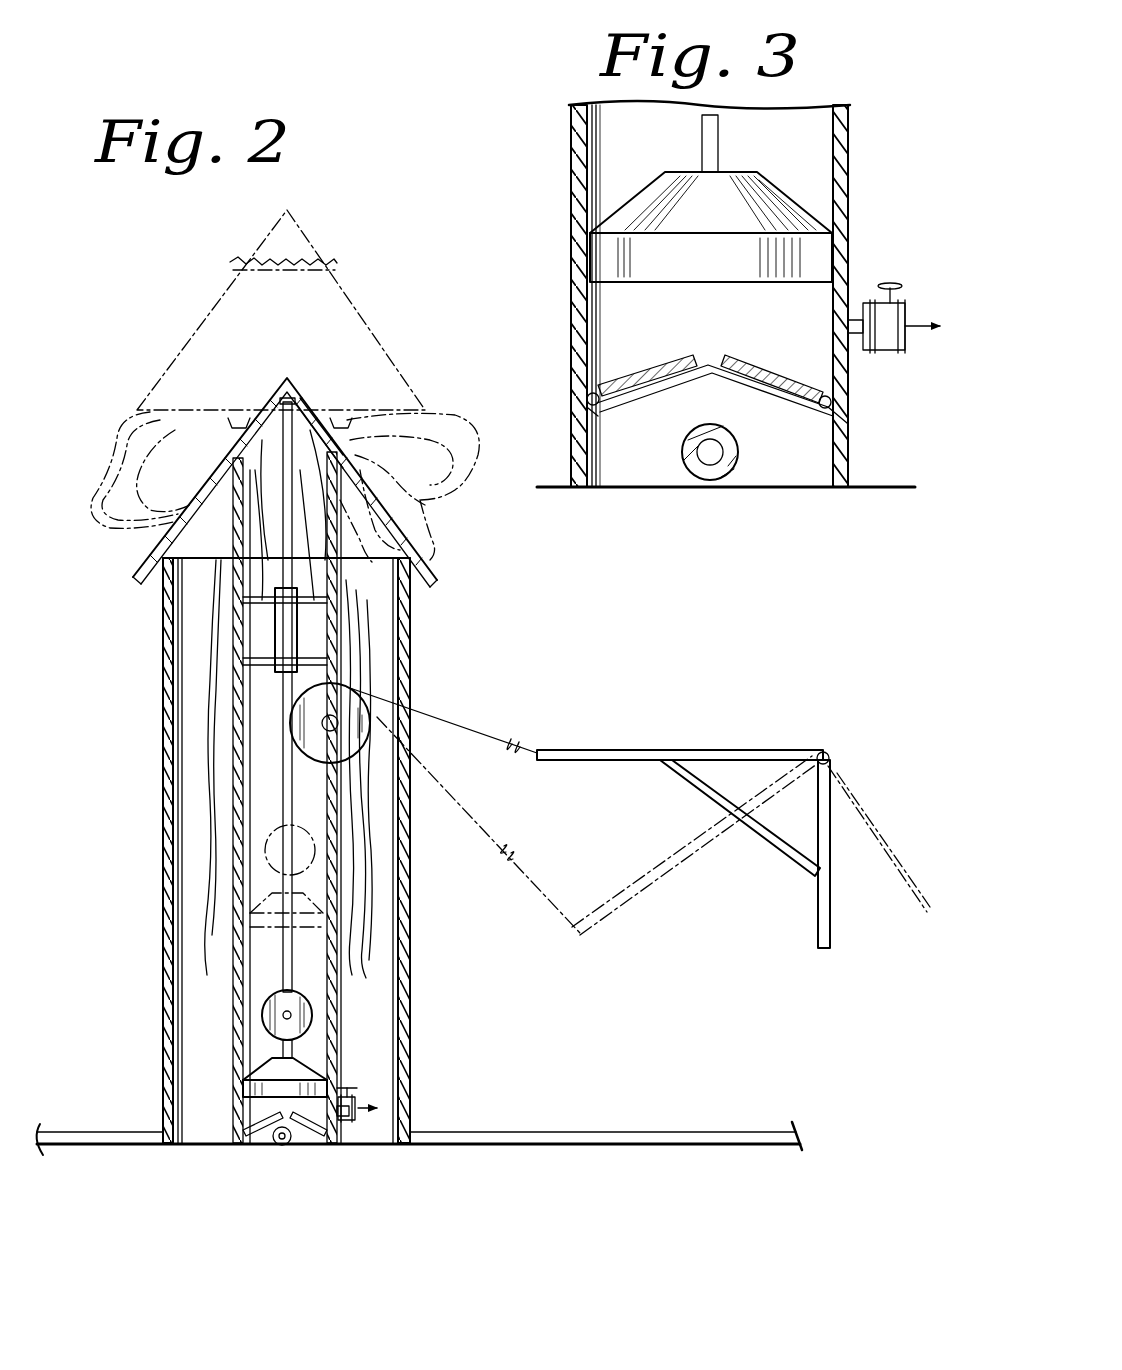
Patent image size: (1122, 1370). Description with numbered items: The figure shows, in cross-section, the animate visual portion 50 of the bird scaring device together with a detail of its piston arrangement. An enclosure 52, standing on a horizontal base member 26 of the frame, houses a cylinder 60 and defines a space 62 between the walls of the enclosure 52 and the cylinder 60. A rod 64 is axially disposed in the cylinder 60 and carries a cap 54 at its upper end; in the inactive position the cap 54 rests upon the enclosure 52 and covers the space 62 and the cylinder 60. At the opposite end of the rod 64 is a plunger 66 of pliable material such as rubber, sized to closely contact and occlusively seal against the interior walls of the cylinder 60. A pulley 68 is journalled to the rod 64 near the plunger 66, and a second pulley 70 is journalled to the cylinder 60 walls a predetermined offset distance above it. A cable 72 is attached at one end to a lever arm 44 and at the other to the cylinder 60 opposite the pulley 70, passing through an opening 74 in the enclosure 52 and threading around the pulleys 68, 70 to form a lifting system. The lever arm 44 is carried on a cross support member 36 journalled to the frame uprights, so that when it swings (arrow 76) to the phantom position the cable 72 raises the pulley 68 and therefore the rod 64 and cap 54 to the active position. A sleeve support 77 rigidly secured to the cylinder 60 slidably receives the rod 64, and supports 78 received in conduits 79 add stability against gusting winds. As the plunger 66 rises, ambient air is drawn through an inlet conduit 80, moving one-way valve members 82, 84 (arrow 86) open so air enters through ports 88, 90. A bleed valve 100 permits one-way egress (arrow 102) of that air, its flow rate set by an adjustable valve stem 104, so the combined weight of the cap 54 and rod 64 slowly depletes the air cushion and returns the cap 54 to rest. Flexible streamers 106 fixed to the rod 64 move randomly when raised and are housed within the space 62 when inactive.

In FIG. 2, the horizontal base member 26 is at (614, 1130).
In FIG. 2, the cross support member 36 is at (831, 758).
In FIG. 2, the lever arm 44 is at (655, 750).
In FIG. 2, the visual portion 50 is at (486, 562).
In FIG. 2, the enclosure 52 is at (163, 840).
In FIG. 2, the cap 54 is at (193, 337).
In FIG. 2, the cylinder 60 is at (333, 1027).
In FIG. 3, the cylinder 60 is at (570, 158).
In FIG. 2, the space 62 is at (408, 970).
In FIG. 2, the rod 64 is at (330, 438).
In FIG. 2, the plunger 66 is at (233, 912).
In FIG. 3, the plunger 66 is at (712, 198).
In FIG. 2, the pulley 68 is at (265, 848).
In FIG. 2, the second pulley 70 is at (330, 723).
In FIG. 2, the cable 72 is at (463, 738).
In FIG. 2, the opening 74 is at (405, 730).
In FIG. 2, the arrow 76 is at (622, 850).
In FIG. 2, the sleeve support 77 is at (280, 622).
In FIG. 2, the supports 78 is at (240, 540).
In FIG. 2, the conduits 79 is at (227, 768).
In FIG. 2, the inlet conduit 80 is at (275, 1146).
In FIG. 3, the inlet conduit 80 is at (712, 482).
In FIG. 2, the one-way valve member 82 is at (242, 1122).
In FIG. 3, the one-way valve member 82 is at (680, 355).
In FIG. 3, the one-way valve member 84 is at (736, 355).
In FIG. 2, the arrow 86 is at (305, 1128).
In FIG. 3, the arrow 86 is at (650, 350).
In FIG. 3, the port 88 is at (640, 400).
In FIG. 3, the port 90 is at (732, 388).
In FIG. 2, the bleed valve 100 is at (350, 1118).
In FIG. 3, the bleed valve 100 is at (893, 352).
In FIG. 2, the arrow 102 is at (365, 1100).
In FIG. 3, the arrow 102 is at (910, 300).
In FIG. 2, the adjustable valve stem 104 is at (346, 1085).
In FIG. 3, the adjustable valve stem 104 is at (868, 285).
In FIG. 2, the streamers 106 is at (117, 440).